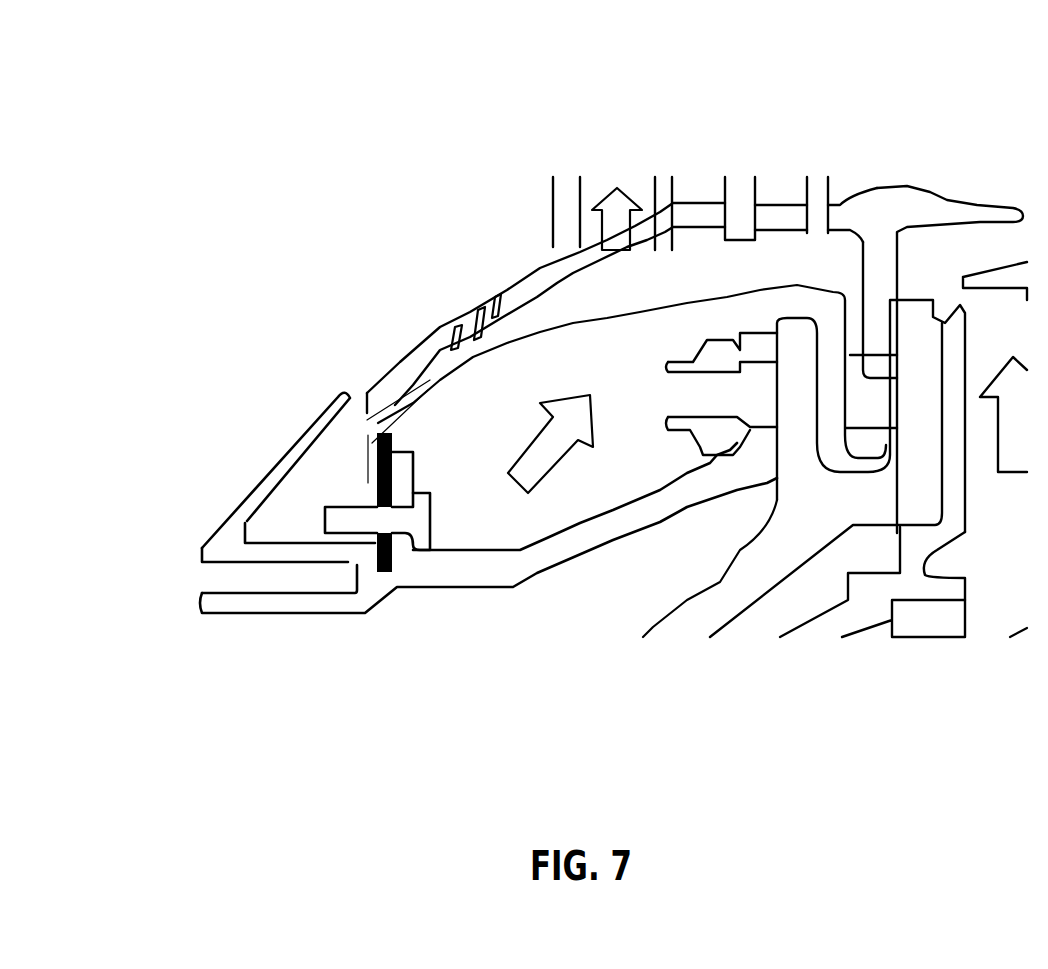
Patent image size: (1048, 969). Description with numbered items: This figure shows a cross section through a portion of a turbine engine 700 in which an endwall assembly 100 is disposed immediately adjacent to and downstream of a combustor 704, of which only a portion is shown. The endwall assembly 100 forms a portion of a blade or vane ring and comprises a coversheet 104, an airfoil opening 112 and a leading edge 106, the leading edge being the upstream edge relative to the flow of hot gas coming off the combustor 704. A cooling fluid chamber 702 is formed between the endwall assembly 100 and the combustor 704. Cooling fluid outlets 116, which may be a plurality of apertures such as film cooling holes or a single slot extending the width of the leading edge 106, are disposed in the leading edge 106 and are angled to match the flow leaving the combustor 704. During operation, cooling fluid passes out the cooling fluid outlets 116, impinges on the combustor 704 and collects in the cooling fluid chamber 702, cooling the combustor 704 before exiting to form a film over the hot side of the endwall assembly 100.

The turbine engine 700 is at (210, 190).
The endwall assembly 100 is at (507, 242).
The coversheet 104 is at (427, 360).
The cooling fluid outlets 116 is at (460, 333).
The airfoil opening 112 is at (637, 248).
The leading edge 106 is at (372, 443).
The cooling fluid chamber 702 is at (297, 508).
The combustor 704 is at (223, 555).